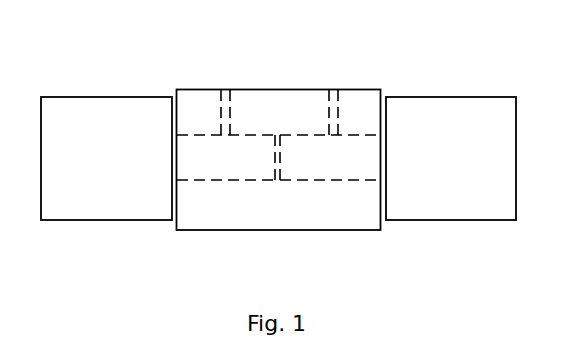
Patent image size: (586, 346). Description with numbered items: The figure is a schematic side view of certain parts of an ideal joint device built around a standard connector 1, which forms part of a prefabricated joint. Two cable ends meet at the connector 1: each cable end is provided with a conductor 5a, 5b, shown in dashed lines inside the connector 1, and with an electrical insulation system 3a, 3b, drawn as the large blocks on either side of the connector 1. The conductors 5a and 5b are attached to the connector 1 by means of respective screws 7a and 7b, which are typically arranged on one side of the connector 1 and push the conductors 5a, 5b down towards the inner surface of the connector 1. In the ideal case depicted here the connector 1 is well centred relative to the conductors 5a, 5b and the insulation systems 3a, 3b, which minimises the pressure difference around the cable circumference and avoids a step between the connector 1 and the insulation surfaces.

The connector 1 is at (303, 89).
The electrical insulation system 3a is at (68, 220).
The electrical insulation system 3b is at (493, 220).
The conductor 5a is at (220, 183).
The conductor 5b is at (331, 185).
The screw 7a is at (218, 117).
The screw 7b is at (338, 112).